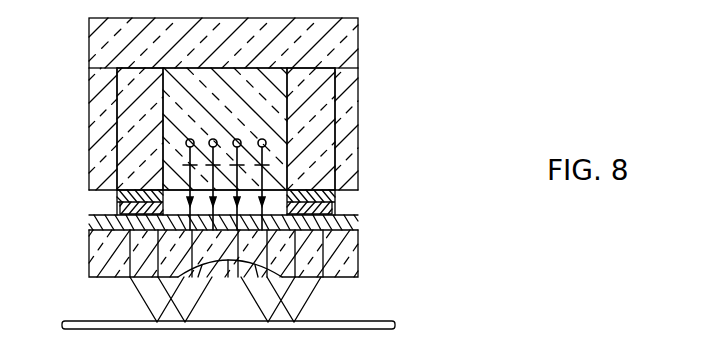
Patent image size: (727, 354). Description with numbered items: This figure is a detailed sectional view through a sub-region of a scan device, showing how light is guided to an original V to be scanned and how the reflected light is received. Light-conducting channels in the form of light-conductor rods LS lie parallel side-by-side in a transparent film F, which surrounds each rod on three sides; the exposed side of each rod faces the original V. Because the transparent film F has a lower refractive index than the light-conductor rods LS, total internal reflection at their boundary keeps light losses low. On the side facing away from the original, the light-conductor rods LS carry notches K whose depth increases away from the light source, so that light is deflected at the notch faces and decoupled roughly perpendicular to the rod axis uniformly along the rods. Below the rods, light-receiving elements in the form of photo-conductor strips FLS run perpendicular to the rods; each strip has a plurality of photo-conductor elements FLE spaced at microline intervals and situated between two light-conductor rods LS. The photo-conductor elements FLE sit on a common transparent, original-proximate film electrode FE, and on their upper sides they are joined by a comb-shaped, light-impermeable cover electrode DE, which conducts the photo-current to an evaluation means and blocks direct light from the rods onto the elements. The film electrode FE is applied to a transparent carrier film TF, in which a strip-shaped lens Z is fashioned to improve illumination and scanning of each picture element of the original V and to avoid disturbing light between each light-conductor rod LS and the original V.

The transparent film F is at (358, 44).
The light-conductor rods LS is at (262, 104).
The notches K is at (349, 165).
The cover electrode DE is at (337, 196).
The photo-conductor elements FLE is at (330, 212).
The film electrode FE is at (350, 225).
The photo-conductor strips FLS is at (285, 213).
The carrier film TF is at (353, 263).
The lens Z is at (238, 272).
The original V is at (385, 322).